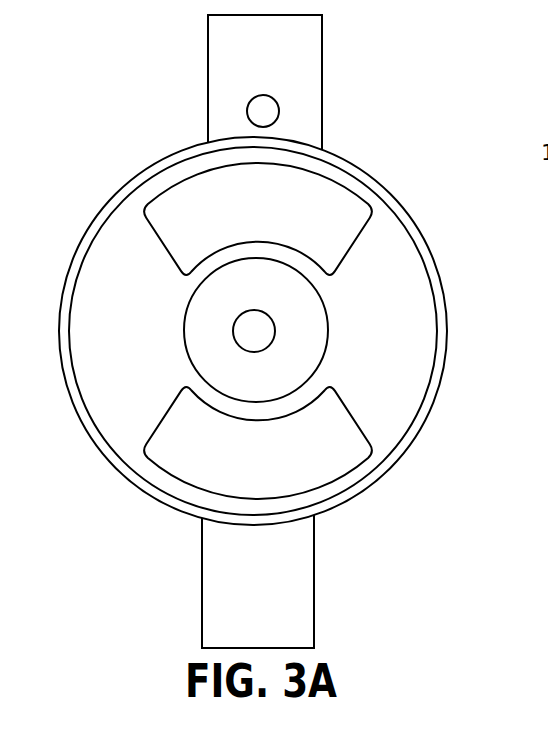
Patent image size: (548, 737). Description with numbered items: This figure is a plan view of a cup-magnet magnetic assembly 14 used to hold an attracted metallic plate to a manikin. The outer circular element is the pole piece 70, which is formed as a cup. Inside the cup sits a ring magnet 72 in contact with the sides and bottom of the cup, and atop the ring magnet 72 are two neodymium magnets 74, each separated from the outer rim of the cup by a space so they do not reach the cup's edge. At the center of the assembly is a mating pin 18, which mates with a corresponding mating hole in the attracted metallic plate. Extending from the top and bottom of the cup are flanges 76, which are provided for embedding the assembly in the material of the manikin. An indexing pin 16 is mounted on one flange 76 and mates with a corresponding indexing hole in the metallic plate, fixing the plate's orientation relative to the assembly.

The magnetic assembly 14 is at (389, 130).
The indexing pin 16 is at (252, 108).
The mating pin 18 is at (258, 335).
The pole piece 70 is at (428, 255).
The ring magnet 72 is at (388, 305).
The neodymium magnets 74 is at (347, 225).
The flanges 76 is at (242, 53).